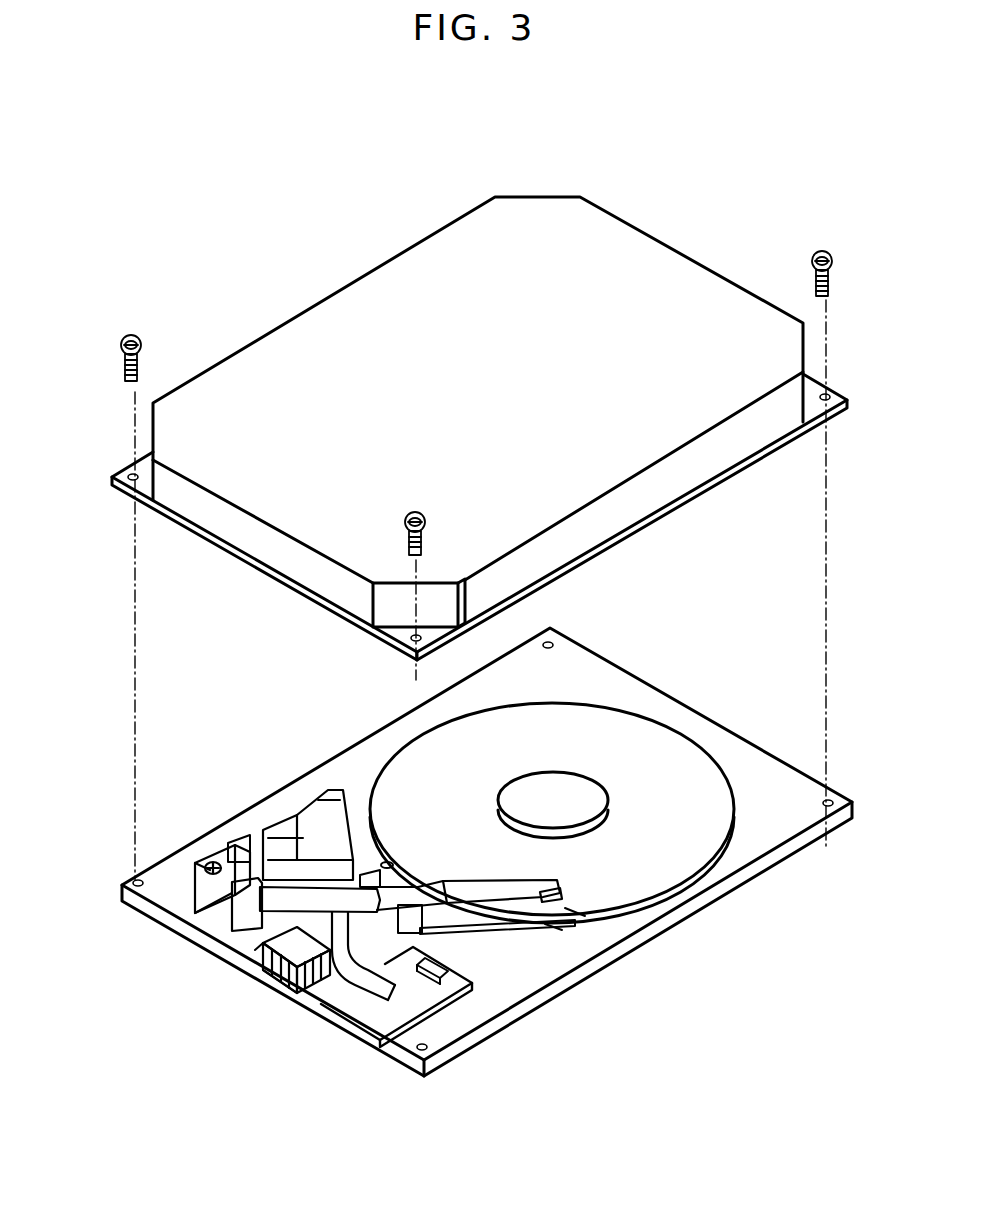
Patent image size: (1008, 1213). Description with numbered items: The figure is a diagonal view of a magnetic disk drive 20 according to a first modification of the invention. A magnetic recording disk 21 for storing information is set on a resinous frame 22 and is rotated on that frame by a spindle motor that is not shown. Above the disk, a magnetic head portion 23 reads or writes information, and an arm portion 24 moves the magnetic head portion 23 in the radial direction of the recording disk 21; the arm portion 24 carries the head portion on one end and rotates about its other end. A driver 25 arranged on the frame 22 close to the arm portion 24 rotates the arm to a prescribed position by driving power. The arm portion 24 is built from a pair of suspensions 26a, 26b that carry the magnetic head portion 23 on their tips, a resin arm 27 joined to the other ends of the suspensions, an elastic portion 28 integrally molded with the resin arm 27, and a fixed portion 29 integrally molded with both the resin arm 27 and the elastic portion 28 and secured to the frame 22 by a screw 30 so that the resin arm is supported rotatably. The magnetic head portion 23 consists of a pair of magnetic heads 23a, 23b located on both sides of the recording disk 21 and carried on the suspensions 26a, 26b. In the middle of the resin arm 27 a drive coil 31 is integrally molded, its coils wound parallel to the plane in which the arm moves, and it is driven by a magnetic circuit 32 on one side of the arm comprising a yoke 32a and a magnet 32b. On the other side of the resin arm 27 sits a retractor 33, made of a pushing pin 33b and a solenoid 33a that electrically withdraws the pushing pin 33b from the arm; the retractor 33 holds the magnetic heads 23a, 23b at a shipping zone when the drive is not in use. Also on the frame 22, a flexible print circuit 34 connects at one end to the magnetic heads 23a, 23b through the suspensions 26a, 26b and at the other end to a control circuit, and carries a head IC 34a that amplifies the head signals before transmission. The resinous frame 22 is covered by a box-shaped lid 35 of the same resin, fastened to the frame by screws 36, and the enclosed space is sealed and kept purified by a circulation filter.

The magnetic disk drive 20 is at (130, 678).
The magnetic recording disk 21 is at (655, 742).
The resinous frame 22 is at (724, 874).
The magnetic head portion 23 is at (560, 886).
The magnetic head 23a is at (583, 918).
The magnetic head 23b is at (560, 931).
The arm portion 24 is at (388, 858).
The driver 25 is at (357, 800).
The suspension 26a is at (470, 878).
The suspension 26b is at (467, 933).
The resin arm 27 is at (277, 903).
The elastic portion 28 is at (220, 893).
The fixed portion 29 is at (213, 860).
The screw 30 is at (228, 828).
The drive coil 31 is at (378, 863).
The magnetic circuit 32 is at (263, 797).
The yoke 32a is at (293, 800).
The magnet 32b is at (318, 795).
The retractor 33 is at (322, 998).
The solenoid 33a is at (277, 978).
The pushing pin 33b is at (253, 970).
The flexible print circuit 34 is at (328, 1003).
The head IC 34a is at (442, 985).
The lid 35 is at (377, 272).
The screws 36 is at (133, 334).